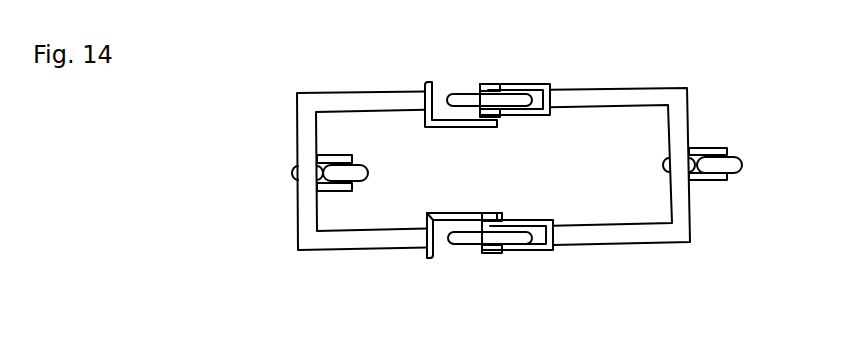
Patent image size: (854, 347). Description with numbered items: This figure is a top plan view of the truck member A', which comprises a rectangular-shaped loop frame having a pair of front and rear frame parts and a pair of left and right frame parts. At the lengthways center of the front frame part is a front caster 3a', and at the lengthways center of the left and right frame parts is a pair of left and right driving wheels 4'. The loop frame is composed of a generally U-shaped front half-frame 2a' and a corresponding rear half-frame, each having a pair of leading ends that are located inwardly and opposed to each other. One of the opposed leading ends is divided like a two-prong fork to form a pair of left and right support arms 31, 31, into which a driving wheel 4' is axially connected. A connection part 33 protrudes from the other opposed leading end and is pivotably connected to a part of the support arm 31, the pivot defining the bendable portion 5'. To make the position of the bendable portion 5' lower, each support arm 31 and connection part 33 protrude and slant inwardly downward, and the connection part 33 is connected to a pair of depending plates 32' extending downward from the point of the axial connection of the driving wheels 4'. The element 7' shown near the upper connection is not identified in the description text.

The truck member A' is at (478, 158).
The front half-frame 2a' is at (493, 197).
The front caster 3a' is at (284, 173).
The driving wheel 4' is at (460, 260).
The bendable portion 5' is at (407, 88).
The upper clip 7' is at (489, 73).
The support arm 31 is at (537, 213).
The depending plate 32' is at (557, 141).
The connection part 33 is at (457, 212).